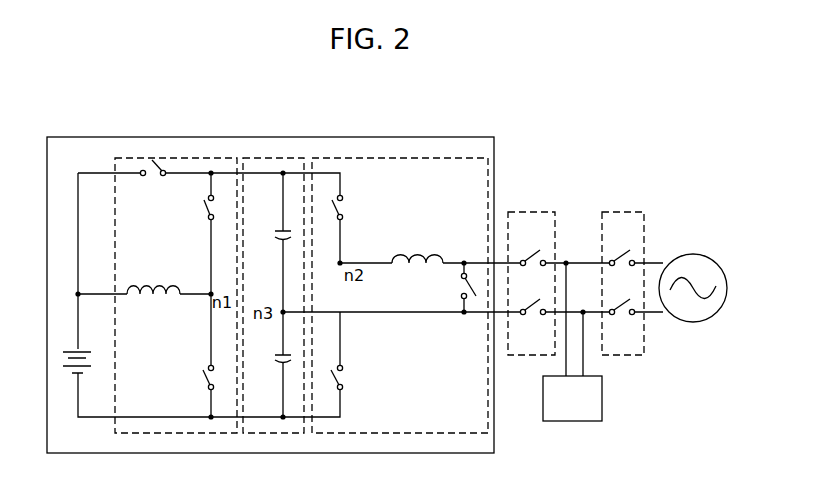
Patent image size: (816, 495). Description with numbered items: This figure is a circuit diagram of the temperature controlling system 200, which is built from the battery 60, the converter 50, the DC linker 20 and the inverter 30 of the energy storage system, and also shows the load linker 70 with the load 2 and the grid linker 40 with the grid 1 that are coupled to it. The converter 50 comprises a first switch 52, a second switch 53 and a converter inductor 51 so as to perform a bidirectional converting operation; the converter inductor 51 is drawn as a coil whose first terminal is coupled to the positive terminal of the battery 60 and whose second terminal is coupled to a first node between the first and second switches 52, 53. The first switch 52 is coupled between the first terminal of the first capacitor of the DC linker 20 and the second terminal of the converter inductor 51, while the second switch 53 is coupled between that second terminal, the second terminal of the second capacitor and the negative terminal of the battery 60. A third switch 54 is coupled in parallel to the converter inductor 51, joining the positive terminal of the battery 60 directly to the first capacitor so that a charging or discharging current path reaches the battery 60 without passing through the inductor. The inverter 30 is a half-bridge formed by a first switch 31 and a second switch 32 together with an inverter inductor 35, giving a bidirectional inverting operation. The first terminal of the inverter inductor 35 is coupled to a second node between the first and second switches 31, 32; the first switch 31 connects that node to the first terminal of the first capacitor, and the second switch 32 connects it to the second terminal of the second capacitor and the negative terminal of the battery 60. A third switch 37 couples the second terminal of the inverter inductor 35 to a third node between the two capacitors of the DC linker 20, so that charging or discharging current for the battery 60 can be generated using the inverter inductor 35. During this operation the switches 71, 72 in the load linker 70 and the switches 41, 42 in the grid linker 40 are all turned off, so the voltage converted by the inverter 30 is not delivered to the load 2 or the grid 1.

The grid 1 is at (693, 254).
The load 2 is at (580, 421).
The DC linker 20 is at (273, 157).
The inverter 30 is at (383, 157).
The first switch 31 is at (345, 205).
The second switch 32 is at (345, 380).
The inverter inductor 35 is at (412, 255).
The third switch 37 is at (460, 284).
The grid linker 40 is at (625, 212).
The switch 41 is at (628, 253).
The switch 42 is at (626, 318).
The converter 50 is at (183, 157).
The converter inductor 51 is at (152, 302).
The first switch 52 is at (204, 200).
The second switch 53 is at (203, 371).
The third switch 54 is at (152, 160).
The battery 60 is at (63, 358).
The load linker 70 is at (535, 212).
The switch 71 is at (536, 253).
The switch 72 is at (535, 318).
The temperature controlling system 200 is at (358, 137).